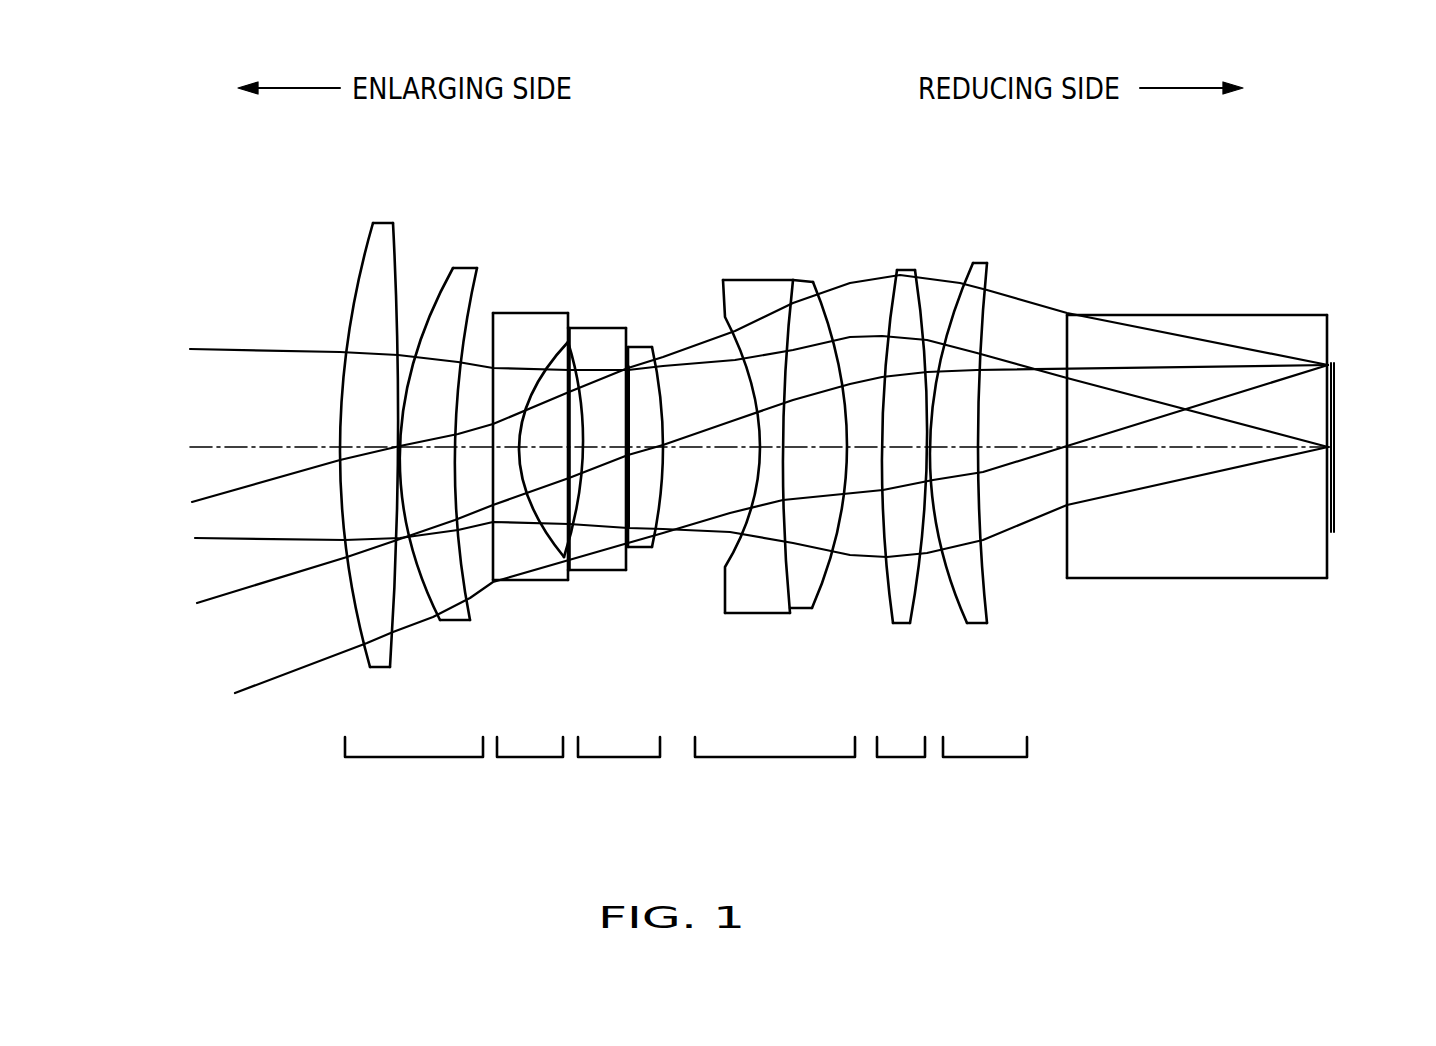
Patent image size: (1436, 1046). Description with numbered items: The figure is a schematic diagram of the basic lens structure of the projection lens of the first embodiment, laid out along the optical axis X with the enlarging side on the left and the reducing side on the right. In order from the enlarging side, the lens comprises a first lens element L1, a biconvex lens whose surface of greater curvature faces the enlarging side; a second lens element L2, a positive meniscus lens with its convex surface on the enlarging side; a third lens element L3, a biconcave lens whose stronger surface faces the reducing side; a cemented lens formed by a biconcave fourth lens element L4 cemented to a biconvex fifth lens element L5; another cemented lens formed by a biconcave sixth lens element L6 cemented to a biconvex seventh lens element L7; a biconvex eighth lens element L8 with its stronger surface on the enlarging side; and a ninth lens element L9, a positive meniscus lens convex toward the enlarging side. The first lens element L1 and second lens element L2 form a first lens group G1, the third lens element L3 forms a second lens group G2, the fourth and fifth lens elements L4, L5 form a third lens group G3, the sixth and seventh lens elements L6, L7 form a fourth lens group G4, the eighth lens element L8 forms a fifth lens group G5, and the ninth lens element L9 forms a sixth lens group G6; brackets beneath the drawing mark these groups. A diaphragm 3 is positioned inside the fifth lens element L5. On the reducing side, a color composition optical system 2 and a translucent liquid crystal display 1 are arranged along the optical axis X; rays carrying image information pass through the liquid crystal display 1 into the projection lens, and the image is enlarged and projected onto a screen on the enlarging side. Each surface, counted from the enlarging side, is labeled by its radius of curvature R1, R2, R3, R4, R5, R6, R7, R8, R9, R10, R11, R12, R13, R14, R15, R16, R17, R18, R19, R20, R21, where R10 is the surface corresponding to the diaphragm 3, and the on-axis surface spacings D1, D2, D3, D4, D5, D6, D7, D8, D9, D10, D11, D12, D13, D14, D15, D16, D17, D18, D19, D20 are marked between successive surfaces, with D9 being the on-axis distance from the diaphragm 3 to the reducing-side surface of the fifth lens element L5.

The optical axis X is at (190, 446).
The translucent liquid crystal display 1 is at (1380, 462).
The color composition optical system 2 is at (1235, 452).
The diaphragm 3 is at (632, 372).
The first lens element L1 is at (386, 446).
The second lens element L2 is at (471, 440).
The third lens element L3 is at (535, 451).
The fourth lens element L4 is at (613, 441).
The fifth lens element L5 is at (672, 426).
The sixth lens element L6 is at (747, 451).
The seventh lens element L7 is at (824, 455).
The eighth lens element L8 is at (912, 457).
The ninth lens element L9 is at (992, 457).
The first lens group G1 is at (414, 776).
The second lens group G2 is at (530, 776).
The third lens group G3 is at (619, 776).
The fourth lens group G4 is at (775, 776).
The fifth lens group G5 is at (901, 776).
The sixth lens group G6 is at (985, 776).
The radius of curvature of first surface R1 is at (357, 643).
The radius of curvature of second surface R2 is at (398, 630).
The radius of curvature of third surface R3 is at (443, 617).
The radius of curvature of fourth surface R4 is at (473, 600).
The radius of curvature of fifth surface R5 is at (494, 578).
The radius of curvature of sixth surface R6 is at (562, 567).
The radius of curvature of seventh surface R7 is at (578, 552).
The radius of curvature of eighth surface R8 is at (628, 535).
The radius of curvature of ninth surface R9 is at (663, 513).
The radius of curvature of diaphragm surface R10 is at (660, 500).
The radius of curvature of eleventh surface R11 is at (725, 567).
The radius of curvature of twelfth surface R12 is at (783, 573).
The radius of curvature of thirteenth surface R13 is at (825, 590).
The radius of curvature of fourteenth surface R14 is at (888, 600).
The radius of curvature of fifteenth surface R15 is at (917, 598).
The radius of curvature of sixteenth surface R16 is at (968, 608).
The radius of curvature of seventeenth surface R17 is at (987, 607).
The radius of curvature of eighteenth surface R18 is at (1066, 558).
The radius of curvature of nineteenth surface R19 is at (1328, 578).
The radius of curvature of twentieth surface R20 is at (1334, 530).
The radius of curvature of twenty-first surface R21 is at (1336, 503).
The on-axis surface spacing D1 is at (358, 447).
The on-axis surface spacing D2 is at (398, 446).
The on-axis surface spacing D3 is at (405, 447).
The on-axis surface spacing D4 is at (404, 448).
The on-axis surface spacing D5 is at (460, 448).
The on-axis surface spacing D6 is at (520, 447).
The on-axis surface spacing D7 is at (584, 447).
The on-axis surface spacing D8 is at (634, 446).
The on-axis surface spacing D9 is at (690, 447).
The on-axis surface spacing D10 is at (690, 452).
The on-axis surface spacing D11 is at (772, 450).
The on-axis surface spacing D12 is at (797, 452).
The on-axis surface spacing D13 is at (870, 447).
The on-axis surface spacing D14 is at (905, 448).
The on-axis surface spacing D15 is at (928, 447).
The on-axis surface spacing D16 is at (1022, 447).
The on-axis surface spacing D17 is at (1035, 447).
The on-axis surface spacing D18 is at (1168, 450).
The on-axis surface spacing D19 is at (1335, 447).
The on-axis surface spacing D20 is at (1340, 470).